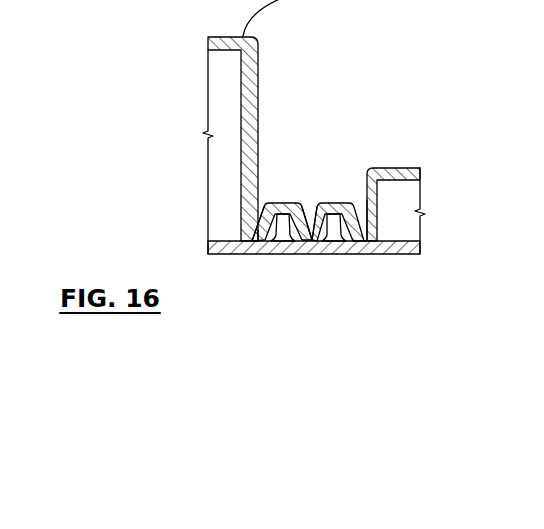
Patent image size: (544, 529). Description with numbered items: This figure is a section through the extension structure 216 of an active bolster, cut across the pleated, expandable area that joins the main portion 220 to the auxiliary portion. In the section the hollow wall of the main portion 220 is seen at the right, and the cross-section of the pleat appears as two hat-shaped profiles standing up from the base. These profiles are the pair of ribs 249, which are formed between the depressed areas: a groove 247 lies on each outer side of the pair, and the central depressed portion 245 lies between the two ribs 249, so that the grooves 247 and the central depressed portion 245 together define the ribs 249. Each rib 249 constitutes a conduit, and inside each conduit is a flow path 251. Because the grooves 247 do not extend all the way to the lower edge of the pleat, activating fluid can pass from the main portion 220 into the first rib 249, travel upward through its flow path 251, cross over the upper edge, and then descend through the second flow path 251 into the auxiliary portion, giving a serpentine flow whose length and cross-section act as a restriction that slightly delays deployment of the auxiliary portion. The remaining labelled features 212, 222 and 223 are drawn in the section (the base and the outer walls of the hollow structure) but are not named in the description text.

The extension structure 216 is at (341, 180).
The rib 249 is at (377, 128).
The groove 247 is at (262, 200).
The central depressed portion 245 is at (311, 201).
The main portion 220 is at (402, 168).
The right outer wall line 222 is at (406, 231).
The left outer wall 223 is at (224, 222).
The base plate 212 is at (321, 254).
The flow path 251 is at (283, 248).